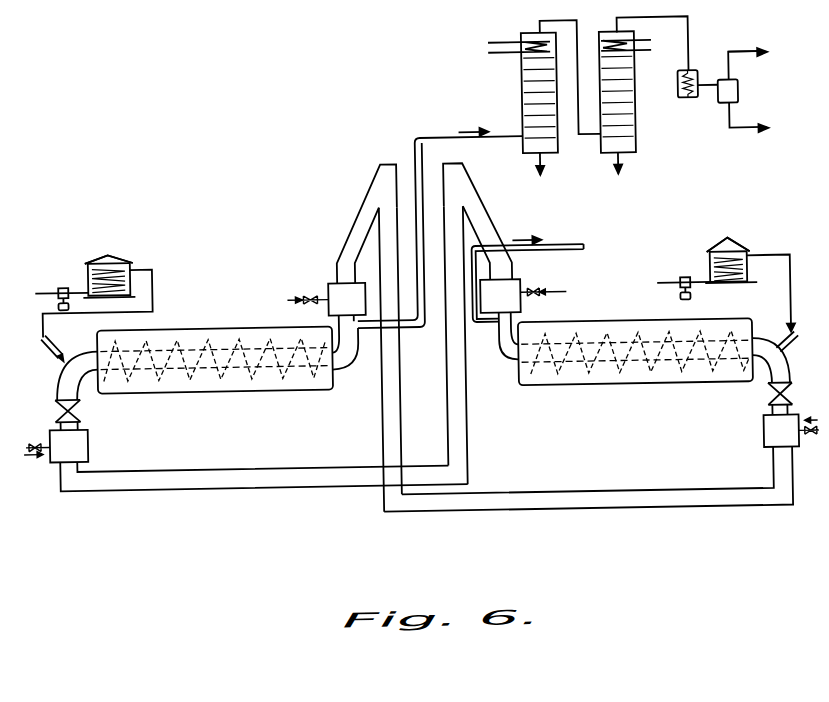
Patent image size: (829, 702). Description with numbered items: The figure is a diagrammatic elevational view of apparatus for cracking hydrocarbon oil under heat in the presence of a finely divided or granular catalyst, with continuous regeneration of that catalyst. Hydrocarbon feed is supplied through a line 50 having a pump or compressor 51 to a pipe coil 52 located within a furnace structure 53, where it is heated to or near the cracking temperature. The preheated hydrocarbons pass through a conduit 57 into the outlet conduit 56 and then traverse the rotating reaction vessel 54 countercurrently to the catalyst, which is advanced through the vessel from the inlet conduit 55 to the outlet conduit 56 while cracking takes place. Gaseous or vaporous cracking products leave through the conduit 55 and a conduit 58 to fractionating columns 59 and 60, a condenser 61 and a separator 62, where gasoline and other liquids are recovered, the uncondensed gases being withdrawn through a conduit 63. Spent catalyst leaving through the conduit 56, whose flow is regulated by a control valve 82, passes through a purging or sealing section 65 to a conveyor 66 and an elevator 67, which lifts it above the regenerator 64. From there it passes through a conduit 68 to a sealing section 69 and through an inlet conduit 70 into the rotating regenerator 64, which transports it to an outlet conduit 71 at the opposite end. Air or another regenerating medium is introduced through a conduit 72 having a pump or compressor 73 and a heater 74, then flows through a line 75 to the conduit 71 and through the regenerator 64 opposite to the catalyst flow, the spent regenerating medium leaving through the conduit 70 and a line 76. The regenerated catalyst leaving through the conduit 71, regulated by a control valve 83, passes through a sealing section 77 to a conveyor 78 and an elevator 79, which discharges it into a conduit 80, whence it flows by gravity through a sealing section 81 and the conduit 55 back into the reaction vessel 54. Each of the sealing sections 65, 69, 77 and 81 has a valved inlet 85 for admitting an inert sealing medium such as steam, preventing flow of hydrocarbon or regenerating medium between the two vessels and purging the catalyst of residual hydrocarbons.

The line 50 is at (83, 286).
The pump or compressor 51 is at (62, 282).
The pipe coil 52 is at (131, 275).
The furnace structure 53 is at (101, 250).
The reaction vessel 54 is at (214, 325).
The inlet conduit 55 is at (355, 352).
The outlet conduit 56 is at (59, 364).
The conduit 57 is at (56, 341).
The conduit 58 is at (415, 148).
The fractionating column 59 is at (562, 147).
The fractionating column 60 is at (639, 144).
The condenser 61 is at (682, 82).
The separator 62 is at (742, 97).
The conduit 63 is at (741, 55).
The regenerator 64 is at (636, 324).
The purging or sealing section 65 is at (86, 438).
The conveyor 66 is at (193, 467).
The elevator 67 is at (465, 436).
The conduit 68 is at (491, 221).
The purging or sealing section 69 is at (520, 280).
The inlet conduit 70 is at (523, 317).
The outlet conduit 71 is at (788, 369).
The conduit 72 is at (703, 285).
The pump or compressor 73 is at (681, 283).
The heater 74 is at (741, 252).
The line 75 is at (791, 302).
The line 76 is at (563, 247).
The sealing or purging section 77 is at (762, 439).
The conveyor 78 is at (629, 494).
The elevator 79 is at (383, 426).
The conduit 80 is at (352, 232).
The purging or sealing section 81 is at (329, 292).
The control valve 82 is at (82, 402).
The control valve 83 is at (767, 398).
The valved inlet 85 is at (307, 300).